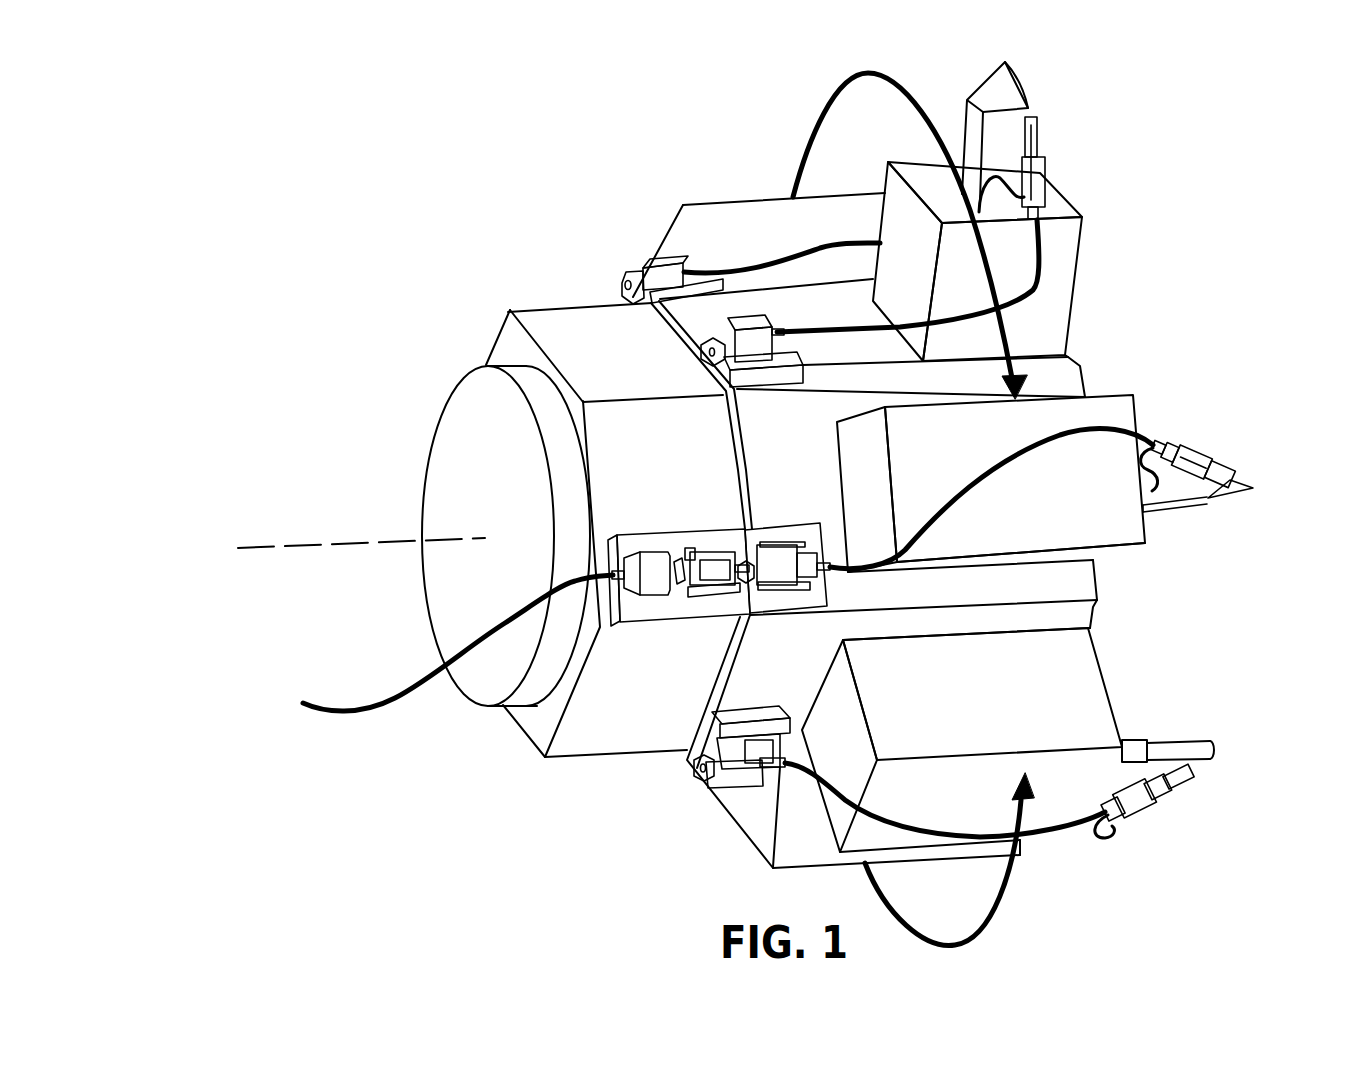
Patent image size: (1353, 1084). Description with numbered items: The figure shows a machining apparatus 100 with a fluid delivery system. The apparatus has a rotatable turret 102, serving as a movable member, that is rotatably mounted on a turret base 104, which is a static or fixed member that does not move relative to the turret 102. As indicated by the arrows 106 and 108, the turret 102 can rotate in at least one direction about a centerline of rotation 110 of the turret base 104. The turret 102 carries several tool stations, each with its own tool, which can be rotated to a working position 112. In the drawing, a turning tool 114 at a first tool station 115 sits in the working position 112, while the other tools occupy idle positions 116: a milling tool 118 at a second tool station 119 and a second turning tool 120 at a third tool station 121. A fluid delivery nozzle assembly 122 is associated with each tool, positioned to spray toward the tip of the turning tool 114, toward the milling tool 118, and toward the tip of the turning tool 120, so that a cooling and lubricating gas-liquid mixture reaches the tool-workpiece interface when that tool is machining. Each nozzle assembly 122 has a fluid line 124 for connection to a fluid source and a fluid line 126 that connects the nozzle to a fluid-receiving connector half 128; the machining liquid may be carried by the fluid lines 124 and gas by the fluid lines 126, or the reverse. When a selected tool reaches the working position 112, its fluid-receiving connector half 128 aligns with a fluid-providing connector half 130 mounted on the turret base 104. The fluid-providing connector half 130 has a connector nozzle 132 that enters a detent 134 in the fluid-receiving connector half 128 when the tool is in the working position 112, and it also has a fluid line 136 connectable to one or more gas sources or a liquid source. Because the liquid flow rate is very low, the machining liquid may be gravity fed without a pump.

The machining apparatus 100 is at (143, 66).
The rotatable turret 102 is at (1218, 228).
The turret base 104 is at (420, 266).
The arrow 106 is at (826, 107).
The arrow 108 is at (993, 910).
The centerline of rotation 110 is at (257, 547).
The working position 112 is at (1183, 407).
The turning tool 114 is at (1233, 500).
The first tool station 115 is at (1147, 545).
The idle positions 116 is at (1106, 210).
The milling tool 118 is at (1181, 738).
The second tool station 119 is at (1113, 699).
The turning tool 120 is at (1020, 86).
The third tool station 121 is at (1075, 253).
The fluid delivery nozzle assembly 122 is at (1040, 127).
The fluid line 124 is at (983, 190).
The fluid line 126 is at (793, 253).
The fluid-receiving connector half 128 is at (633, 262).
The fluid-providing connector half 130 is at (658, 531).
The connector nozzle 132 is at (745, 547).
The detent 134 is at (622, 289).
The fluid line 136 is at (347, 717).